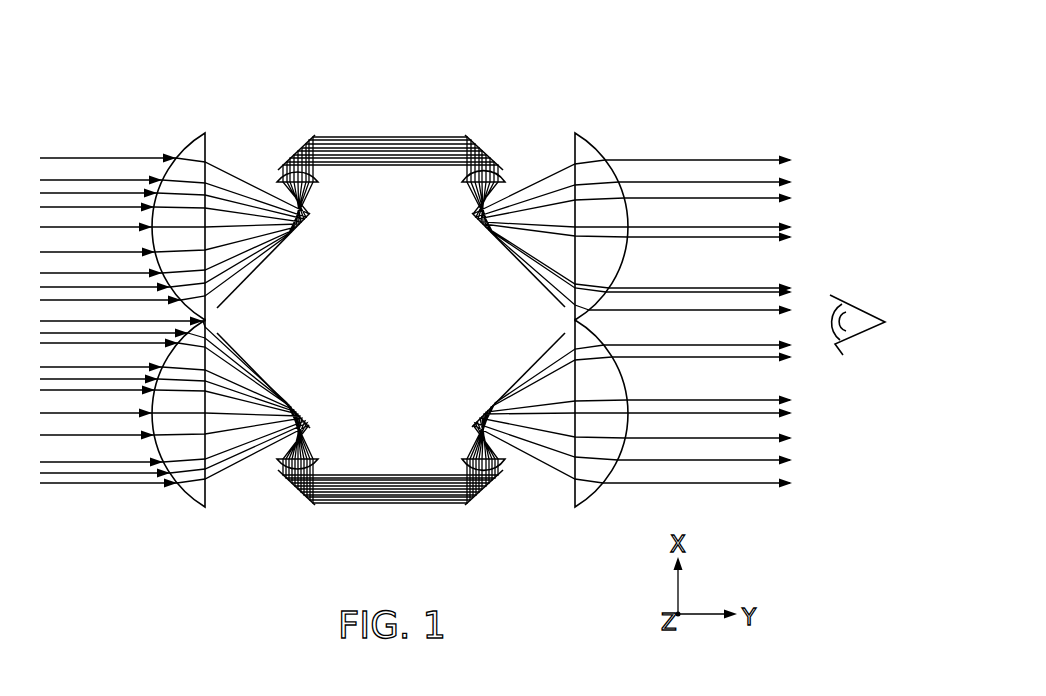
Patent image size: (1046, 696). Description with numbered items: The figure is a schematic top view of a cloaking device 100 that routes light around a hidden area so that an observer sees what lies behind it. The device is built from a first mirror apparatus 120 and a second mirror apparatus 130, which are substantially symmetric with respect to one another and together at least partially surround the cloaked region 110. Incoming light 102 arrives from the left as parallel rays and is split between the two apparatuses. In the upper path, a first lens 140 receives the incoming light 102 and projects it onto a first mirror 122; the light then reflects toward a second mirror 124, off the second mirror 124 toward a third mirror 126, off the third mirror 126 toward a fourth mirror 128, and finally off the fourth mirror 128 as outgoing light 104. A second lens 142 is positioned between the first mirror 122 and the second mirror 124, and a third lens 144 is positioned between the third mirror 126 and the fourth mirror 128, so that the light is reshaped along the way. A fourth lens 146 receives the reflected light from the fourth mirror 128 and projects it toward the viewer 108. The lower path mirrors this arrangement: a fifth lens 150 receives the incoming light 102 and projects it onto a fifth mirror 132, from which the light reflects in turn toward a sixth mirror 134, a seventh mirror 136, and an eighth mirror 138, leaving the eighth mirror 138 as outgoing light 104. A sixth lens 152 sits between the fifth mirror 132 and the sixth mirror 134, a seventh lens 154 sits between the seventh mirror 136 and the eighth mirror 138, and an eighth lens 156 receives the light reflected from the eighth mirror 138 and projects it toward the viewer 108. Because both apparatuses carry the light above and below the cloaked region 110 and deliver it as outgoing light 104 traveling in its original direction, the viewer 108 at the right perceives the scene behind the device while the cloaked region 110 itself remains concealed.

The cloaking device 100 is at (698, 100).
The incoming light 102 is at (75, 157).
The outgoing light 104 is at (745, 158).
The viewer 108 is at (852, 306).
The cloaked region 110 is at (406, 333).
The first mirror apparatus 120 is at (238, 83).
The first mirror 122 is at (243, 285).
The second mirror 124 is at (290, 147).
The third mirror 126 is at (484, 150).
The fourth mirror 128 is at (538, 283).
The second mirror apparatus 130 is at (237, 550).
The fifth mirror 132 is at (243, 356).
The sixth mirror 134 is at (300, 492).
The seventh mirror 136 is at (481, 492).
The eighth mirror 138 is at (538, 355).
The first lens 140 is at (198, 131).
The second lens 142 is at (316, 183).
The third lens 144 is at (465, 183).
The fourth lens 146 is at (583, 131).
The fifth lens 150 is at (198, 510).
The sixth lens 152 is at (318, 460).
The seventh lens 154 is at (462, 460).
The eighth lens 156 is at (583, 509).